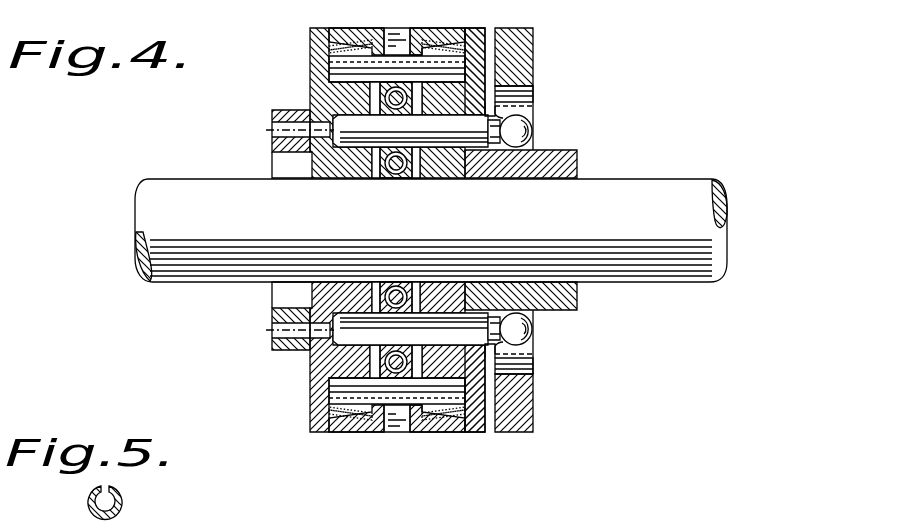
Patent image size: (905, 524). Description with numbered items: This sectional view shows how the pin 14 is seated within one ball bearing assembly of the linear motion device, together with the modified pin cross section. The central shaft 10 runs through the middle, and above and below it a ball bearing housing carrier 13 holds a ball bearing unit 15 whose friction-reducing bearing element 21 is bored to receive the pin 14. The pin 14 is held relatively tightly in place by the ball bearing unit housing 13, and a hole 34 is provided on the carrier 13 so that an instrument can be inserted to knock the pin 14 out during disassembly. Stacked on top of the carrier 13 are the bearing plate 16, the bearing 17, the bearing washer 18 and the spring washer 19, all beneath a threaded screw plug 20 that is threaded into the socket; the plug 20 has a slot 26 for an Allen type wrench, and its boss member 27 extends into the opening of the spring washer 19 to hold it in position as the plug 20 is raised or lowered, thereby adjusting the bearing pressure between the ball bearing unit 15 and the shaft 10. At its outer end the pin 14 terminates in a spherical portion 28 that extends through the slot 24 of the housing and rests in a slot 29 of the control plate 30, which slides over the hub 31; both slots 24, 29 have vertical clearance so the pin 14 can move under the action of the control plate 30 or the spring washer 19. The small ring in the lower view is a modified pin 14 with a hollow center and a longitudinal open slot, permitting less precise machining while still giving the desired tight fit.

The central shaft 10 is at (662, 190).
The ball bearing housing carrier 13 is at (320, 95).
The pin 14 is at (450, 133).
The ball bearing unit 15 is at (398, 174).
The bearing plate 16 is at (352, 77).
The bearing 17 is at (333, 68).
The bearing washer 18 is at (348, 14).
The spring washer 19 is at (462, 38).
The threaded screw plug 20 is at (445, 10).
The friction-reducing bearing element 21 is at (390, 172).
The opening (slot) in housing 24 is at (494, 106).
The slot 26 is at (403, 12).
The boss member 27 is at (421, 436).
The spherical portion 28 is at (526, 133).
The slot on control plate 29 is at (518, 90).
The control plate 30 is at (523, 68).
The hub 31 is at (577, 160).
The hole 34 is at (268, 132).